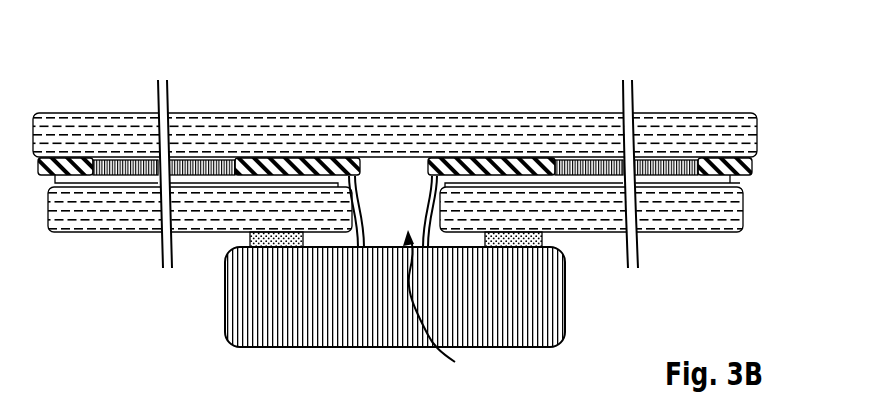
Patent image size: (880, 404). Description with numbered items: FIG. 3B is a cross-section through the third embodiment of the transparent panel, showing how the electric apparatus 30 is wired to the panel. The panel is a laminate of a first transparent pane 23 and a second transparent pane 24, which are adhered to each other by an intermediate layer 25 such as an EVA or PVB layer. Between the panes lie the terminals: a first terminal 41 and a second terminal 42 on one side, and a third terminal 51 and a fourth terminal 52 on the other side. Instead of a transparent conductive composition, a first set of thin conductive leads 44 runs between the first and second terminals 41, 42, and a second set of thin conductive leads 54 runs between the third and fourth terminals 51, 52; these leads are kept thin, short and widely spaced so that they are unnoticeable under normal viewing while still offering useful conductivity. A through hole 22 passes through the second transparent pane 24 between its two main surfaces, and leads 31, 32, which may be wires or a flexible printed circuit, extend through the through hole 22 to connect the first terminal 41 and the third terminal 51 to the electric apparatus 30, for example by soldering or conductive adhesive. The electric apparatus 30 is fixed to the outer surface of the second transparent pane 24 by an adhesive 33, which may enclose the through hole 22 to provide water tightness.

The through hole 22 is at (442, 307).
The first transparent pane 23 is at (482, 137).
The second transparent pane 24 is at (75, 218).
The intermediate layer 25 is at (118, 182).
The electric apparatus 30 is at (325, 320).
The lead 31 is at (362, 214).
The lead 32 is at (427, 215).
The adhesive 33 is at (250, 242).
The first terminal 41 is at (301, 172).
The second terminal 42 is at (73, 160).
The first set of thin conductive leads 44 is at (208, 158).
The third terminal 51 is at (435, 172).
The fourth terminal 52 is at (732, 177).
The second set of thin conductive leads 54 is at (655, 173).